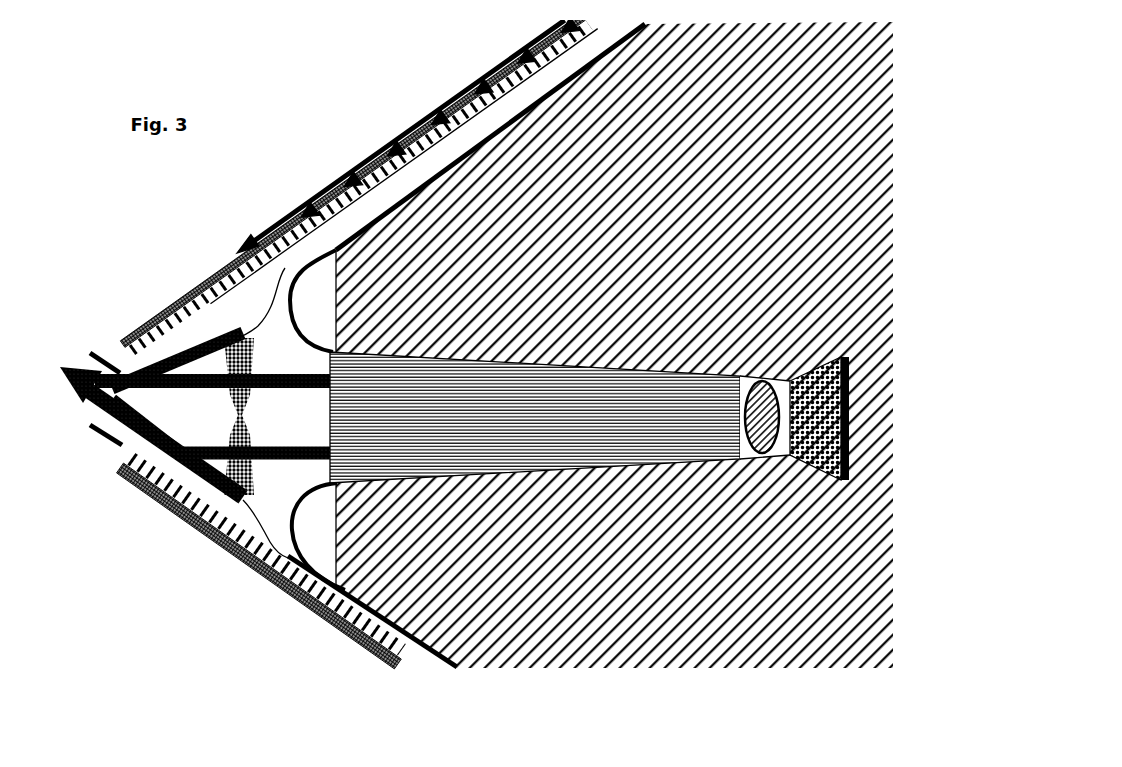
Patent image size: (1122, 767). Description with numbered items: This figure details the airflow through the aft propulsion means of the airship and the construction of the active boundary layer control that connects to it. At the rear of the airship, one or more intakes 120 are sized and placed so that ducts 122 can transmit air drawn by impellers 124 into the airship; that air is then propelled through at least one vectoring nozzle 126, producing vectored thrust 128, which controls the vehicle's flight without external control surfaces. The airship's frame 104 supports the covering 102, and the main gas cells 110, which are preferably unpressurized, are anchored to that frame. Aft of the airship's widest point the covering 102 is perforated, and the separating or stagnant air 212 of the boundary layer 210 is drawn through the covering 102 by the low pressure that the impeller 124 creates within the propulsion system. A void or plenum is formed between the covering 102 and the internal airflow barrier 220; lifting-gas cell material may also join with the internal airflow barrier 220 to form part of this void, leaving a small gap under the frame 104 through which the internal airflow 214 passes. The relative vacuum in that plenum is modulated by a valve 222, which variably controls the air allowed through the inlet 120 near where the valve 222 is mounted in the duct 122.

The covering 102 is at (207, 288).
The frame 104 is at (507, 77).
The main gas cells 110 is at (452, 527).
The intake 120 is at (822, 418).
The duct 122 is at (633, 418).
The impeller 124 is at (238, 480).
The vectoring nozzle 126 is at (97, 436).
The vectored thrust 128 is at (78, 362).
The boundary layer 210 is at (480, 78).
The stagnant air 212 is at (463, 108).
The internal airflow 214 is at (168, 425).
The internal airflow barrier 220 is at (274, 242).
The valve 222 is at (748, 445).